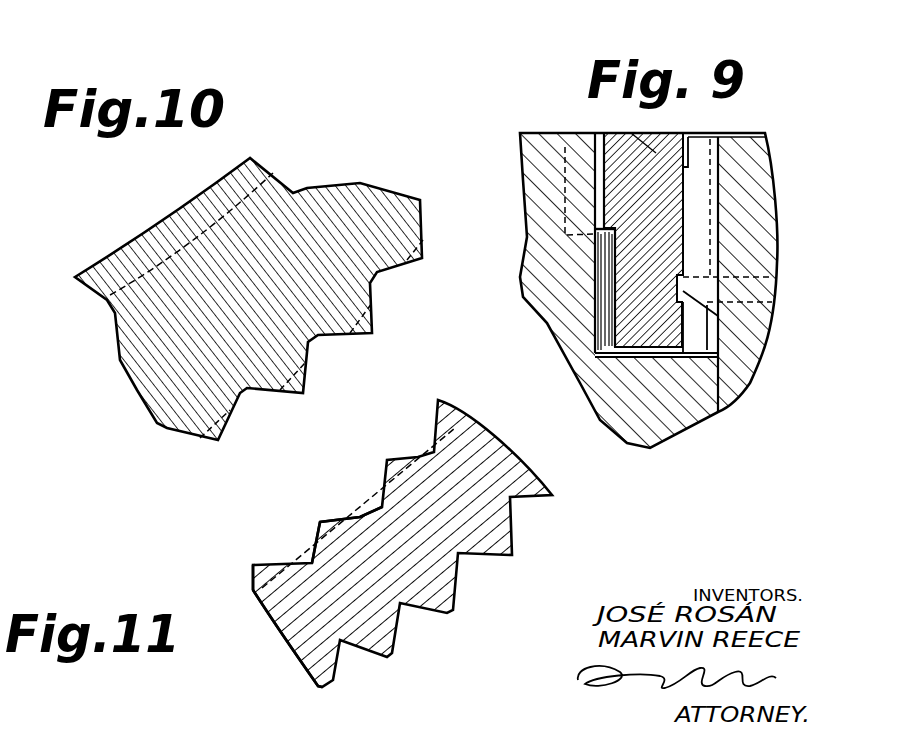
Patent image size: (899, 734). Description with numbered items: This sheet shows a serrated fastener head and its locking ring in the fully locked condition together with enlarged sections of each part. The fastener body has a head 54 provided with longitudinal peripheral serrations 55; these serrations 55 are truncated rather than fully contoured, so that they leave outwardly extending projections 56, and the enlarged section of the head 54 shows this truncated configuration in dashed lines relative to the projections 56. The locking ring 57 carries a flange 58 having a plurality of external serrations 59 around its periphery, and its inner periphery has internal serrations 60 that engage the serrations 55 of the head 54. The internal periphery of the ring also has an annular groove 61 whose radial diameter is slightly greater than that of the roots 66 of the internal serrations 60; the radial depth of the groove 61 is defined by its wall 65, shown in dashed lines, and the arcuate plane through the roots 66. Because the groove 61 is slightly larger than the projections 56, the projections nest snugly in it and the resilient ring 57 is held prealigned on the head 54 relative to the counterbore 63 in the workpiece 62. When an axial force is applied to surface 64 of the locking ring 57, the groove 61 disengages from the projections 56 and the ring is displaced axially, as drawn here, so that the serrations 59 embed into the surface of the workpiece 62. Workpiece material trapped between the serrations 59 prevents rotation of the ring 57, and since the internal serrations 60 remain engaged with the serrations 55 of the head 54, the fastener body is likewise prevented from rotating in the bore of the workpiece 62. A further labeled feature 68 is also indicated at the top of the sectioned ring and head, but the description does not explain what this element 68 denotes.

In FIG. 10, the head 54 is at (303, 186).
In FIG. 9, the head 54 is at (743, 350).
In FIG. 10, the longitudinal peripheral serrations 55 is at (366, 301).
In FIG. 9, the longitudinal peripheral serrations 55 is at (700, 162).
In FIG. 10, the projections 56 is at (307, 388).
In FIG. 9, the projections 56 is at (687, 183).
In FIG. 9, the locking ring 57 is at (607, 132).
In FIG. 11, the locking ring 57 is at (303, 627).
In FIG. 9, the flange 58 is at (603, 218).
In FIG. 9, the external serrations 59 is at (595, 148).
In FIG. 11, the external serrations 59 is at (310, 675).
In FIG. 9, the internal serrations 60 is at (708, 136).
In FIG. 11, the internal serrations 60 is at (337, 523).
In FIG. 9, the annular groove 61 is at (678, 282).
In FIG. 9, the workpiece 62 is at (600, 386).
In FIG. 9, the counterbore 63 is at (603, 330).
In FIG. 9, the surface 64 is at (600, 132).
In FIG. 9, the wall 65 is at (678, 299).
In FIG. 11, the wall 65 is at (258, 588).
In FIG. 11, the roots 66 is at (300, 568).
In FIG. 9, the top surface 68 is at (676, 134).